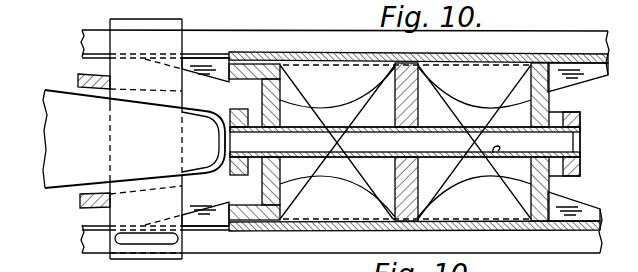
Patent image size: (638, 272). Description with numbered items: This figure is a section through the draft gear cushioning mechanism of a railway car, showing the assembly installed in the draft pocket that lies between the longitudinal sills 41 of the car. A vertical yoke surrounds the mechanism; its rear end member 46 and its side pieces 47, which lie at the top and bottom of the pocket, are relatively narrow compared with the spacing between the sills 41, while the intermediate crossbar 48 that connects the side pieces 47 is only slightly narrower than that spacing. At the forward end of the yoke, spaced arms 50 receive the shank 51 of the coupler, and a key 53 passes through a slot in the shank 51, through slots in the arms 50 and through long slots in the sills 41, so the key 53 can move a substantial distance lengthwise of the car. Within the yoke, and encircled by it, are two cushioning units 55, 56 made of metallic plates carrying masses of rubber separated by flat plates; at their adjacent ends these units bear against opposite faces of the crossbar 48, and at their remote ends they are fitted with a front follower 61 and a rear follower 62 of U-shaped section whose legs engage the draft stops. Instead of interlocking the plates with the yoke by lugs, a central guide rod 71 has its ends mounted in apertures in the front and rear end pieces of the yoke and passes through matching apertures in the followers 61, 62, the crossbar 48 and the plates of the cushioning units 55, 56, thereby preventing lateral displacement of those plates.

The longitudinal sills 41 is at (583, 22).
The rear end member 46 is at (582, 117).
The side pieces 47 is at (509, 0).
The crossbar 48 is at (420, 80).
The spaced arms 50 is at (80, 78).
The shank 51 is at (134, 139).
The key 53 is at (175, 23).
The cushioning unit 55 is at (278, 3).
The cushioning unit 56 is at (510, 203).
The front follower 61 is at (275, 90).
The rear follower 62 is at (545, 100).
The central guide rod 71 is at (496, 153).